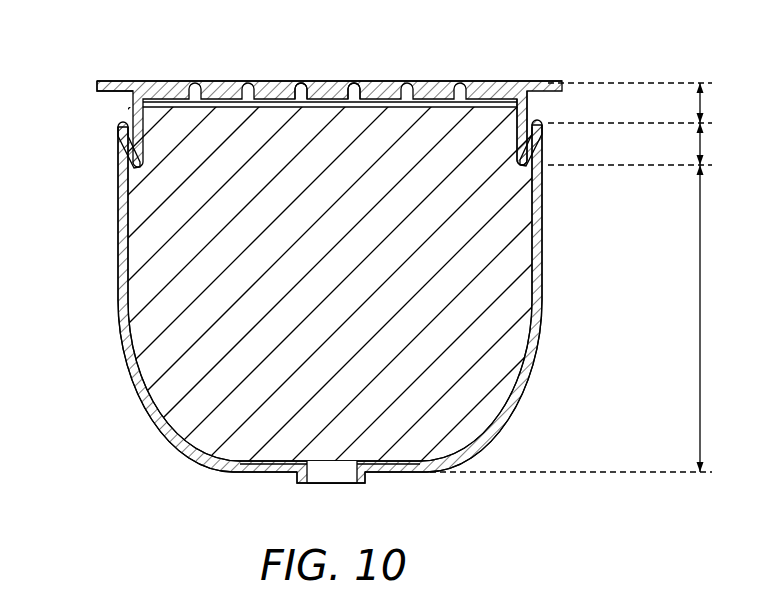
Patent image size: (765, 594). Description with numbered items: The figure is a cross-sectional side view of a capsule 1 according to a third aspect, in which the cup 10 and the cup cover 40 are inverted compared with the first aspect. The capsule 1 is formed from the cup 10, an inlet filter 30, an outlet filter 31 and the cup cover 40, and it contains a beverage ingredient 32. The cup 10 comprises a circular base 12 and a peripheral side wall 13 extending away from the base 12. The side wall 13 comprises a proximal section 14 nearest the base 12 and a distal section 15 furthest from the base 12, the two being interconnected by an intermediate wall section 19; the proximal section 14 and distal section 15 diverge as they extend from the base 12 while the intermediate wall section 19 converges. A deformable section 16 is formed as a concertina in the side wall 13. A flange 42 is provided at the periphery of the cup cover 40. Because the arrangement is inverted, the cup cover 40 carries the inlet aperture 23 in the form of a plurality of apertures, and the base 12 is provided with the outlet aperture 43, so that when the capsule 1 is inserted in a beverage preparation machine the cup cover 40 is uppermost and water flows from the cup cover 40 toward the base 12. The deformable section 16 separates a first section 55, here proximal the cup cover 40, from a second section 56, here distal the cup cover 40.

The capsule 1 is at (64, 60).
The cup 10 is at (90, 270).
The base 12 is at (438, 80).
The peripheral side wall 13 is at (562, 282).
The proximal section 14 is at (543, 218).
The distal section 15 is at (530, 104).
The deformable section 16 is at (110, 145).
The intermediate wall section 19 is at (534, 148).
The inlet aperture 23 is at (302, 86).
The inlet filter 30 is at (167, 98).
The outlet filter 31 is at (328, 462).
The beverage ingredient 32 is at (513, 253).
The cup cover 40 is at (539, 72).
The flange 42 is at (97, 90).
The outlet aperture 43 is at (316, 492).
The first section 55 is at (641, 103).
The second section 56 is at (582, 297).